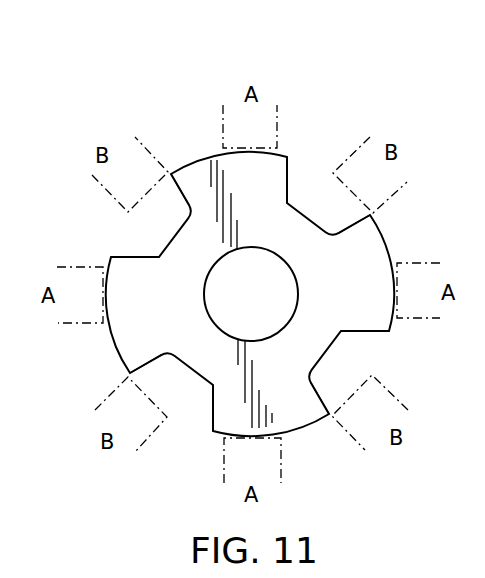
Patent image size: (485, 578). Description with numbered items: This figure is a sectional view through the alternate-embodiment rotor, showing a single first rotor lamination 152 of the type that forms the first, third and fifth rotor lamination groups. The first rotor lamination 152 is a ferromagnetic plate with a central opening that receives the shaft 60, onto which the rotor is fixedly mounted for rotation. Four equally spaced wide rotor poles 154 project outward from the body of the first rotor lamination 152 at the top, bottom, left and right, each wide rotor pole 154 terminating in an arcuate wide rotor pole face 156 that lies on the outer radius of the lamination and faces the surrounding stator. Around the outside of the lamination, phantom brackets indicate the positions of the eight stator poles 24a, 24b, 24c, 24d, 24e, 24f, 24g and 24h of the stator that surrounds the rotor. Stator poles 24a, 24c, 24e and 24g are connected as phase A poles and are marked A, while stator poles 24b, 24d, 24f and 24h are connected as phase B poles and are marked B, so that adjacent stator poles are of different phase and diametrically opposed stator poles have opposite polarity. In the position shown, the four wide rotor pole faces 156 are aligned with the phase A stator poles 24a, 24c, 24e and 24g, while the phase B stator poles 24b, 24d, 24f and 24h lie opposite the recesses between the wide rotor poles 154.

The stator pole 24a is at (265, 120).
The stator pole 24b is at (367, 167).
The stator pole 24c is at (410, 287).
The stator pole 24d is at (370, 418).
The stator pole 24e is at (232, 467).
The stator pole 24f is at (135, 428).
The stator pole 24g is at (73, 280).
The stator pole 24h is at (132, 168).
The first rotor lamination 152 is at (288, 202).
The wide rotor pole 154 is at (232, 410).
The wide rotor pole face 156 is at (308, 428).
The shaft 60 is at (275, 277).